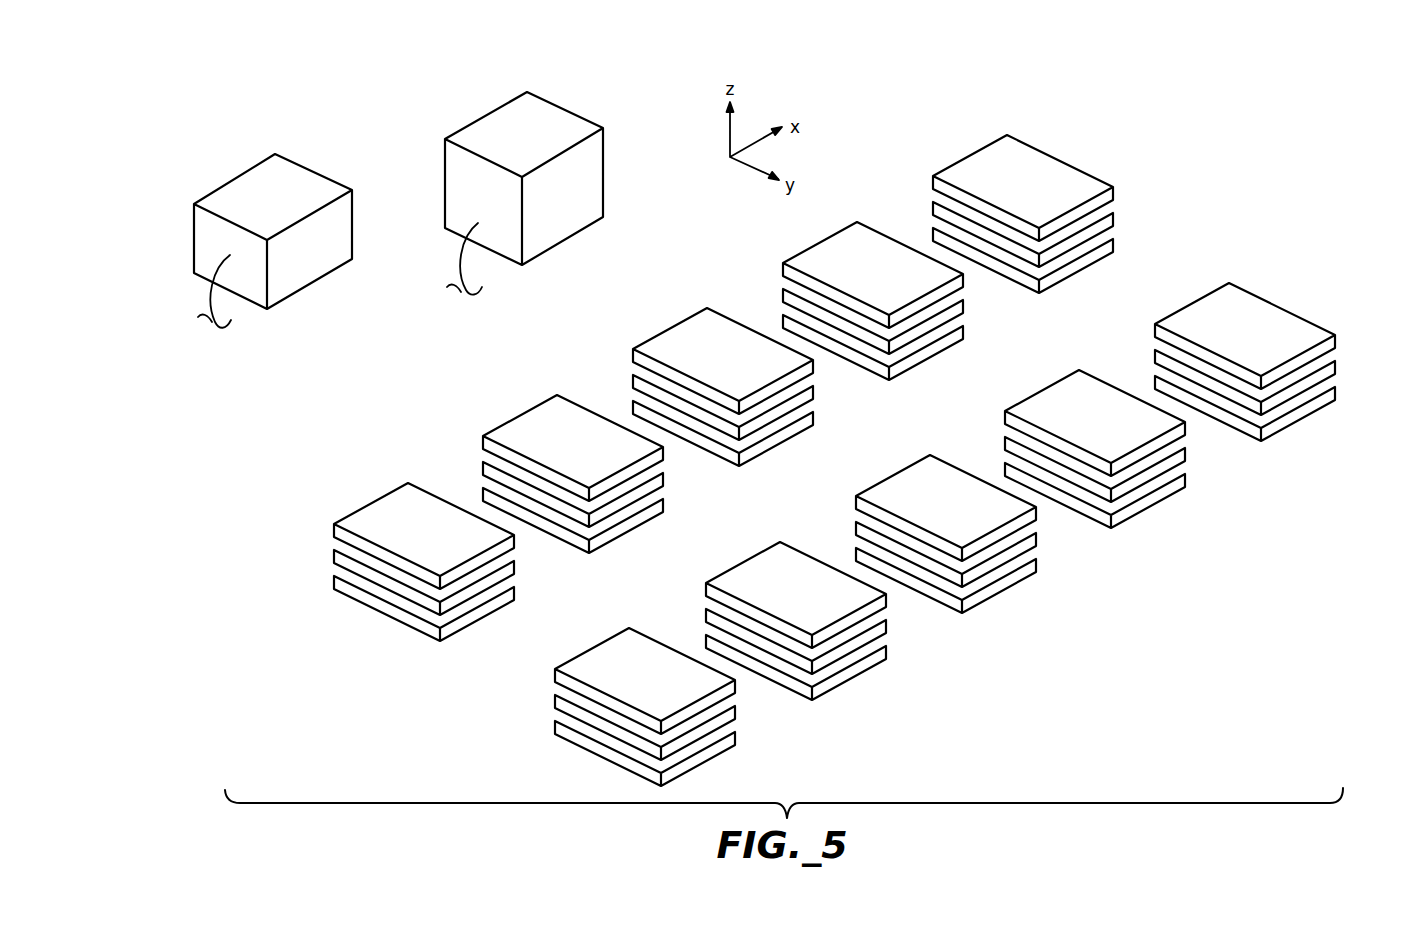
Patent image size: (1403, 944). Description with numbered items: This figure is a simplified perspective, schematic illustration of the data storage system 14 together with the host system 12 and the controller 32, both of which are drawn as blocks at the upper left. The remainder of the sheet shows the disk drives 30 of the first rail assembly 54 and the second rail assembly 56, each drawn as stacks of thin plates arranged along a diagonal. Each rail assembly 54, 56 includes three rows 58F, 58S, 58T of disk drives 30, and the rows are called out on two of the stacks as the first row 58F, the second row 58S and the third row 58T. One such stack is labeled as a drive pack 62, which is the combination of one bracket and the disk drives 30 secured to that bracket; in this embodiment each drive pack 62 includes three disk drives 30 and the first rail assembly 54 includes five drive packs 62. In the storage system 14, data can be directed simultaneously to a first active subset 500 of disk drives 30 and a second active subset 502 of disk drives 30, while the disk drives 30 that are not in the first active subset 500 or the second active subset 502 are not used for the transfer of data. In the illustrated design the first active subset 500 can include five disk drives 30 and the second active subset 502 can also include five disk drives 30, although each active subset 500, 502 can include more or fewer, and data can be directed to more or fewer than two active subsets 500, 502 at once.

The host system 12 is at (505, 146).
The controller 32 is at (258, 219).
The storage system 14 is at (1060, 122).
The disk drive 30 is at (977, 165).
The first rail assembly 54 is at (1004, 125).
The second rail assembly 56 is at (1226, 275).
The first active subset 500 is at (1049, 190).
The second active subset 502 is at (1271, 337).
The drive pack 62 is at (486, 601).
The first row 58F is at (486, 608).
The second row 58S is at (486, 641).
The third row 58T is at (486, 667).